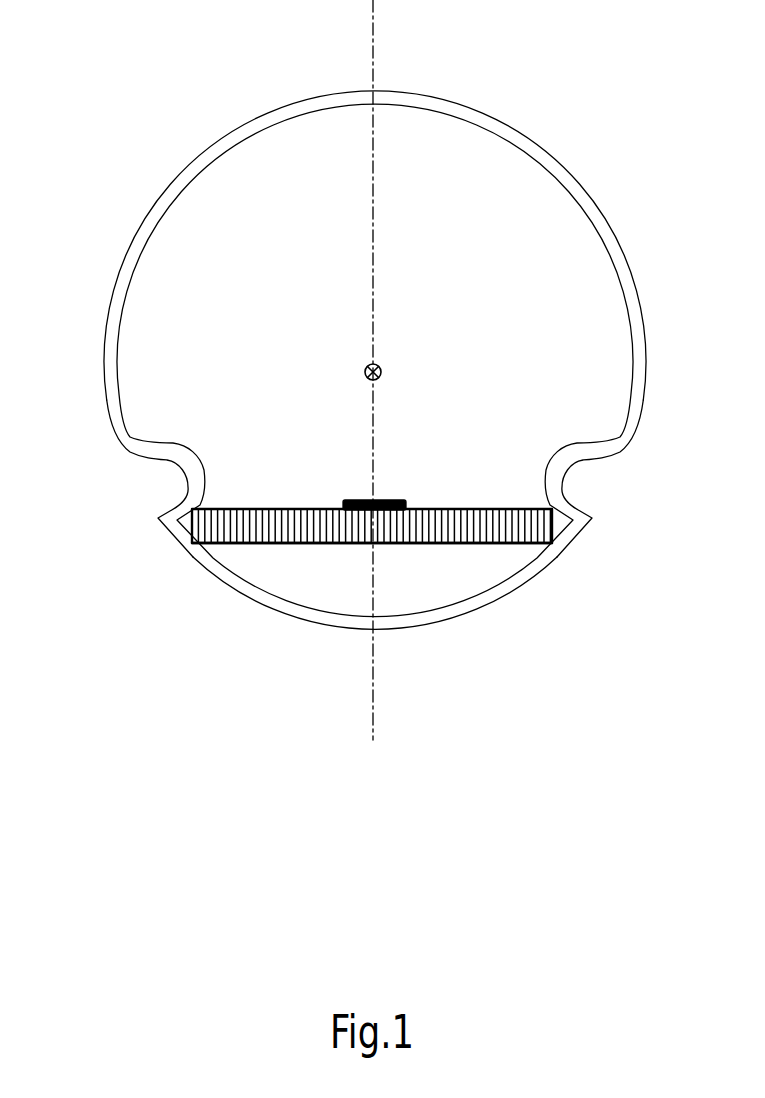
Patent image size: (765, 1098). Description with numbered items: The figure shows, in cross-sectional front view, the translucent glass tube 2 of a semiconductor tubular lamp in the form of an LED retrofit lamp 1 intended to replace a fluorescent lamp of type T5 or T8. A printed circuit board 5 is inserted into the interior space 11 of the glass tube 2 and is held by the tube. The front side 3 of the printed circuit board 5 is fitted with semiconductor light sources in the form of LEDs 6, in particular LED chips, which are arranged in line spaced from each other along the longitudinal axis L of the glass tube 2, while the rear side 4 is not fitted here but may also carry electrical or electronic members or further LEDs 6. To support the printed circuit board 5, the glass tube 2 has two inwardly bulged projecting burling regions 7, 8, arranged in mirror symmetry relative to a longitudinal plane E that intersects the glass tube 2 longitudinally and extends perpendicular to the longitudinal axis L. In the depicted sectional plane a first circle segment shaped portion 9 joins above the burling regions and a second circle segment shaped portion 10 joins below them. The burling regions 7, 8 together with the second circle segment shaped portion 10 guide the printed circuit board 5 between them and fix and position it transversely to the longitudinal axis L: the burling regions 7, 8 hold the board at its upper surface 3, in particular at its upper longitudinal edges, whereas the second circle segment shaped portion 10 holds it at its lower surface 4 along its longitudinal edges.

The LED retrofit lamp 1 is at (120, 142).
The translucent glass tube 2 is at (399, 398).
The front side of the printed circuit board 3 is at (372, 517).
The rear side of the printed circuit board 4 is at (360, 545).
The printed circuit board 5 is at (443, 520).
The LEDs 6 is at (360, 501).
The burling region 7 is at (178, 465).
The burling region 8 is at (565, 474).
The first circle segment shaped portion 9 is at (643, 335).
The second circle segment shaped portion 10 is at (343, 628).
The interior space 11 is at (598, 262).
The longitudinal plane E is at (373, 2).
The longitudinal axis L is at (366, 363).